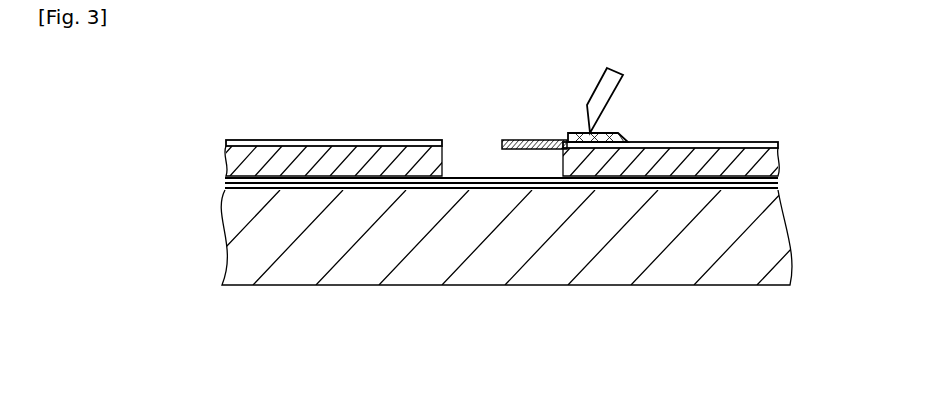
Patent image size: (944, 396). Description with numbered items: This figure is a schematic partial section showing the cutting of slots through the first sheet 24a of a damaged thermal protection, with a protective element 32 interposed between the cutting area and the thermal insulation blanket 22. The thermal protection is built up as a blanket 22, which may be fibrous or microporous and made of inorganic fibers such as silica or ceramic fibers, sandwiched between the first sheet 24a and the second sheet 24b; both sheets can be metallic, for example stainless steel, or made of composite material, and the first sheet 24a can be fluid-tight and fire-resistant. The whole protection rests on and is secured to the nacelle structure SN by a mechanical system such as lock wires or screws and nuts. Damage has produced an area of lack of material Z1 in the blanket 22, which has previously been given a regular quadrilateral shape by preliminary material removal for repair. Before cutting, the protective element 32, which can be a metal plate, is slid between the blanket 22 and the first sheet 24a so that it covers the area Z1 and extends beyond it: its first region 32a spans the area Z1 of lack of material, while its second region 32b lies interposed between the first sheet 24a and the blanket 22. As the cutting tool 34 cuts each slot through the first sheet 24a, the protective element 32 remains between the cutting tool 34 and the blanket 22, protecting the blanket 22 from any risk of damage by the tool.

The blanket 22 is at (298, 190).
The first sheet 24a is at (716, 142).
The second sheet 24b is at (701, 190).
The protective element 32 is at (576, 117).
The first region 32a is at (527, 140).
The second region 32b is at (610, 141).
The cutting tool 34 is at (602, 92).
The nacelle structure SN is at (778, 244).
The area of lack of material Z1 is at (499, 161).